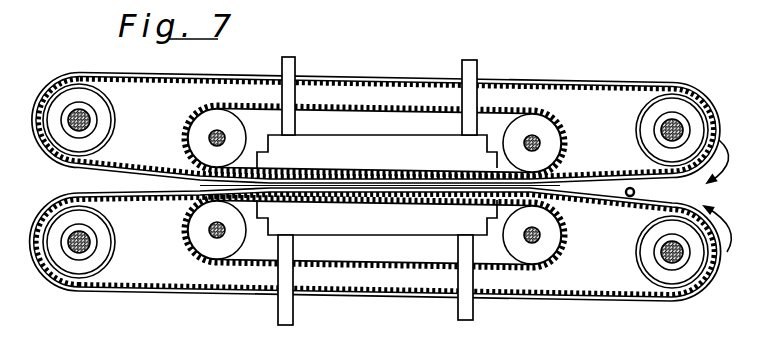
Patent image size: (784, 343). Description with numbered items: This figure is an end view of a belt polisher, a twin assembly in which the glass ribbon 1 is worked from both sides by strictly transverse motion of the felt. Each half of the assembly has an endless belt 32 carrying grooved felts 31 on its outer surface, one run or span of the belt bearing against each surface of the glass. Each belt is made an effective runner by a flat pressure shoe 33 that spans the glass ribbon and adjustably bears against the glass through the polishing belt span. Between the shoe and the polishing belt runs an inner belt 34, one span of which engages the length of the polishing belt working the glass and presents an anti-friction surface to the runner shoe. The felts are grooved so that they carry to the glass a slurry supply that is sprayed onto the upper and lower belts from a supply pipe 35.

The article 1 is at (316, 180).
The grooved felt 31 is at (357, 77).
The endless belt 32 is at (403, 81).
The flat pressure shoe 33 is at (384, 142).
The inner belt 34 is at (188, 116).
The supply pipe 35 is at (637, 192).